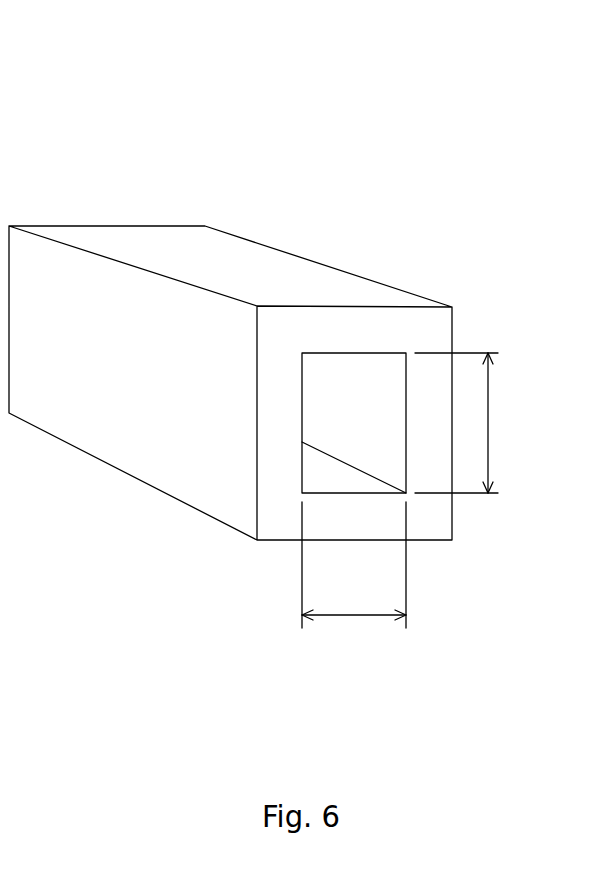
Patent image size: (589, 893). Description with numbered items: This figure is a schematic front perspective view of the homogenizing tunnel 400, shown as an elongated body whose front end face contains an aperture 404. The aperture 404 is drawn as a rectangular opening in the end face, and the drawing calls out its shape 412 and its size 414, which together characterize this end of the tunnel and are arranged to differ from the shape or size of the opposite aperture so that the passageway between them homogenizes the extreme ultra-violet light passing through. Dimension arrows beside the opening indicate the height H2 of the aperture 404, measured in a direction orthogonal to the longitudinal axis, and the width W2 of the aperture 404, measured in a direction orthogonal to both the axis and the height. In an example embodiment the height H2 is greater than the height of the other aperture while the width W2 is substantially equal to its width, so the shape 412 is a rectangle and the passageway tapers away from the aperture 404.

The homogenizing tunnel 400 is at (275, 117).
The aperture 404 is at (287, 443).
The shape 412 is at (325, 352).
The size 414 is at (363, 370).
The height H2 is at (490, 399).
The width W2 is at (354, 615).